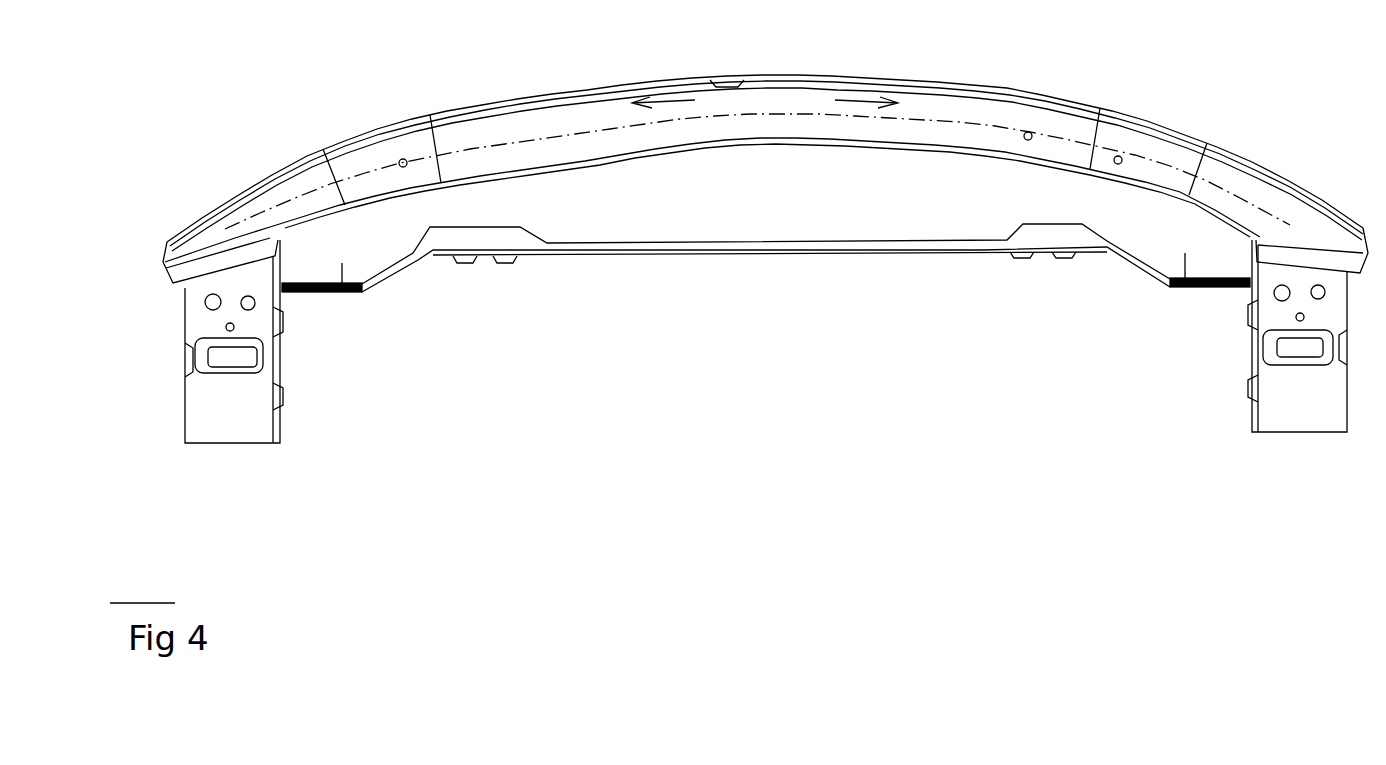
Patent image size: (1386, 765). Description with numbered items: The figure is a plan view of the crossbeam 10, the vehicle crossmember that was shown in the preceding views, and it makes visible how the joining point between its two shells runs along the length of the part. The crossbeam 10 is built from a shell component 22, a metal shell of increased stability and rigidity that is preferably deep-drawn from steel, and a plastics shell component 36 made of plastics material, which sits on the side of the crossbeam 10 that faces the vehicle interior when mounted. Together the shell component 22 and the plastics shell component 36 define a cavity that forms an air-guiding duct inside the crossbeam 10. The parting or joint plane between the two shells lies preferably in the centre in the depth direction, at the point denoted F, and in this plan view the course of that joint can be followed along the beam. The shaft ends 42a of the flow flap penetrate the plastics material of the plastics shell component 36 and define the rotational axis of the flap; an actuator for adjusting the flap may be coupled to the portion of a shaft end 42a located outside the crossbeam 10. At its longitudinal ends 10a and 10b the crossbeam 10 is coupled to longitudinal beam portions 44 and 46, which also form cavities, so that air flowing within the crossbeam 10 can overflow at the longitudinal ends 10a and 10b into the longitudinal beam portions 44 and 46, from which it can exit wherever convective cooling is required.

The crossbeam 10 is at (433, 79).
The longitudinal end 10a is at (1331, 178).
The longitudinal end 10b is at (206, 166).
The shell component 22 is at (975, 92).
The plastics shell component 36 is at (922, 140).
The shaft ends 42a is at (410, 168).
The longitudinal beam portion 44 is at (1288, 413).
The longitudinal beam portion 46 is at (235, 425).
The joint plane point F is at (852, 114).